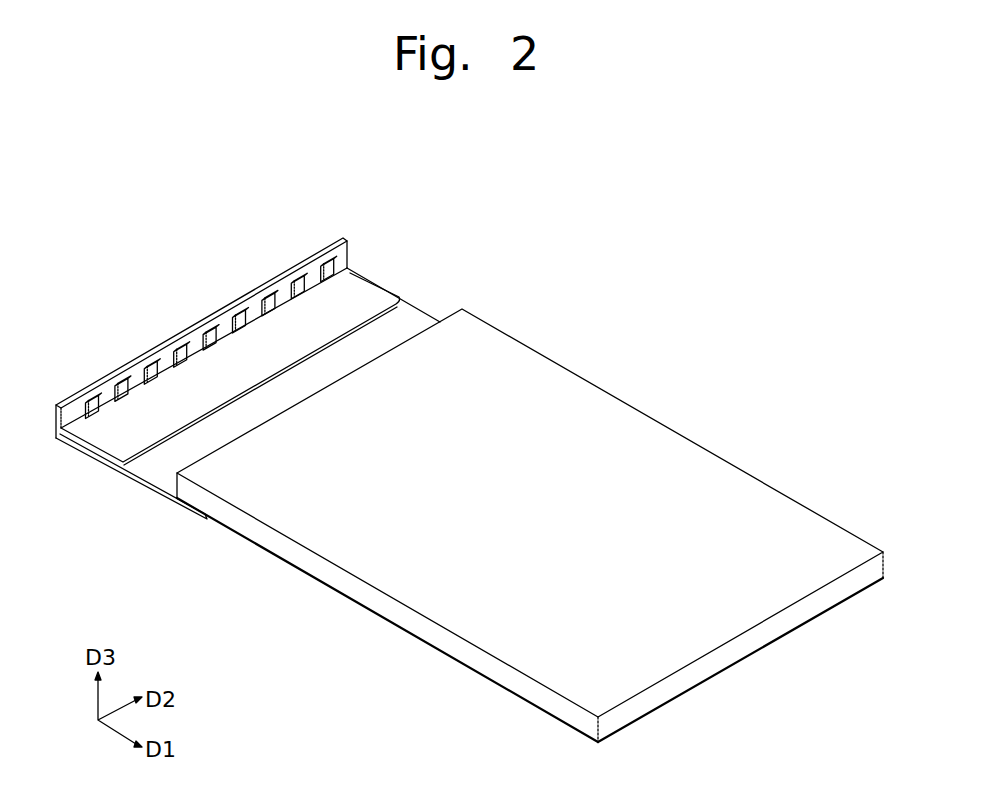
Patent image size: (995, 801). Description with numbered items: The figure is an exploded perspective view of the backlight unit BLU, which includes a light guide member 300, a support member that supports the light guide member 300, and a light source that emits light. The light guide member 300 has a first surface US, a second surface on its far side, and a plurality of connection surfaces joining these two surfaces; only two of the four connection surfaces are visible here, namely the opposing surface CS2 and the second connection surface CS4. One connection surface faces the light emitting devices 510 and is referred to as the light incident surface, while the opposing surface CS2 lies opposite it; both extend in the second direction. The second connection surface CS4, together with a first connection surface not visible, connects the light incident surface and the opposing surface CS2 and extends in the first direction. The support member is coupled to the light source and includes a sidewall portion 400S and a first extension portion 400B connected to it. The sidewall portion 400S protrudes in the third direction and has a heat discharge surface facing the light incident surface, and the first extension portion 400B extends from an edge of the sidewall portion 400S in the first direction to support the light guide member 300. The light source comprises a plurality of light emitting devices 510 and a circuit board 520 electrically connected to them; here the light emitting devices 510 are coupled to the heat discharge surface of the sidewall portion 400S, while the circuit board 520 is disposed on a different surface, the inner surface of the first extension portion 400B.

The backlight unit BLU is at (682, 252).
The light guide member 300 is at (545, 355).
The first surface US is at (675, 450).
The opposing surface CS2 is at (750, 640).
The second connection surface CS4 is at (410, 618).
The sidewall portion 400S is at (100, 380).
The first extension portion 400B is at (123, 472).
The light emitting device 510 is at (330, 271).
The circuit board 520 is at (357, 298).